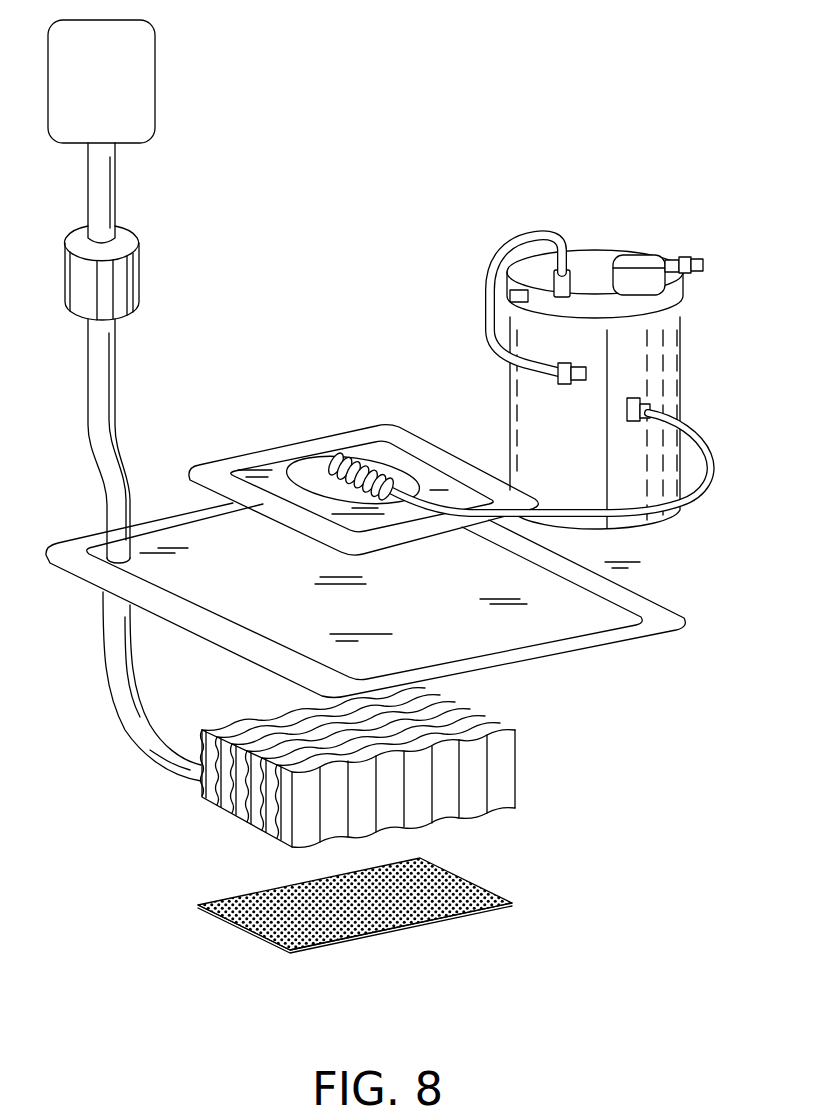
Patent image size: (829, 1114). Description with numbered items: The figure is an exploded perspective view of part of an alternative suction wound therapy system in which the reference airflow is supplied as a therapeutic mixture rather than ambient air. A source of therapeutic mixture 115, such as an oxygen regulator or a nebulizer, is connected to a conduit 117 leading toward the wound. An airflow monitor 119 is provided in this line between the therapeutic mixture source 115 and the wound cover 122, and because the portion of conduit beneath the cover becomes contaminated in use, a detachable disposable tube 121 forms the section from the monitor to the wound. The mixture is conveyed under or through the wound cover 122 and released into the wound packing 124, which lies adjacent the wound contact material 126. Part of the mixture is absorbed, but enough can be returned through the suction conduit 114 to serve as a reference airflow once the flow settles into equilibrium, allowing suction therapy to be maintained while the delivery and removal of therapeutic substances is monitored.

The suction conduit 114 is at (707, 452).
The source of therapeutic mixture 115 is at (155, 80).
The conduit 117 is at (117, 190).
The airflow monitor 119 is at (138, 278).
The detachable disposable tube 121 is at (118, 392).
The wound cover 122 is at (570, 629).
The wound packing 124 is at (518, 772).
The wound contact material 126 is at (470, 877).